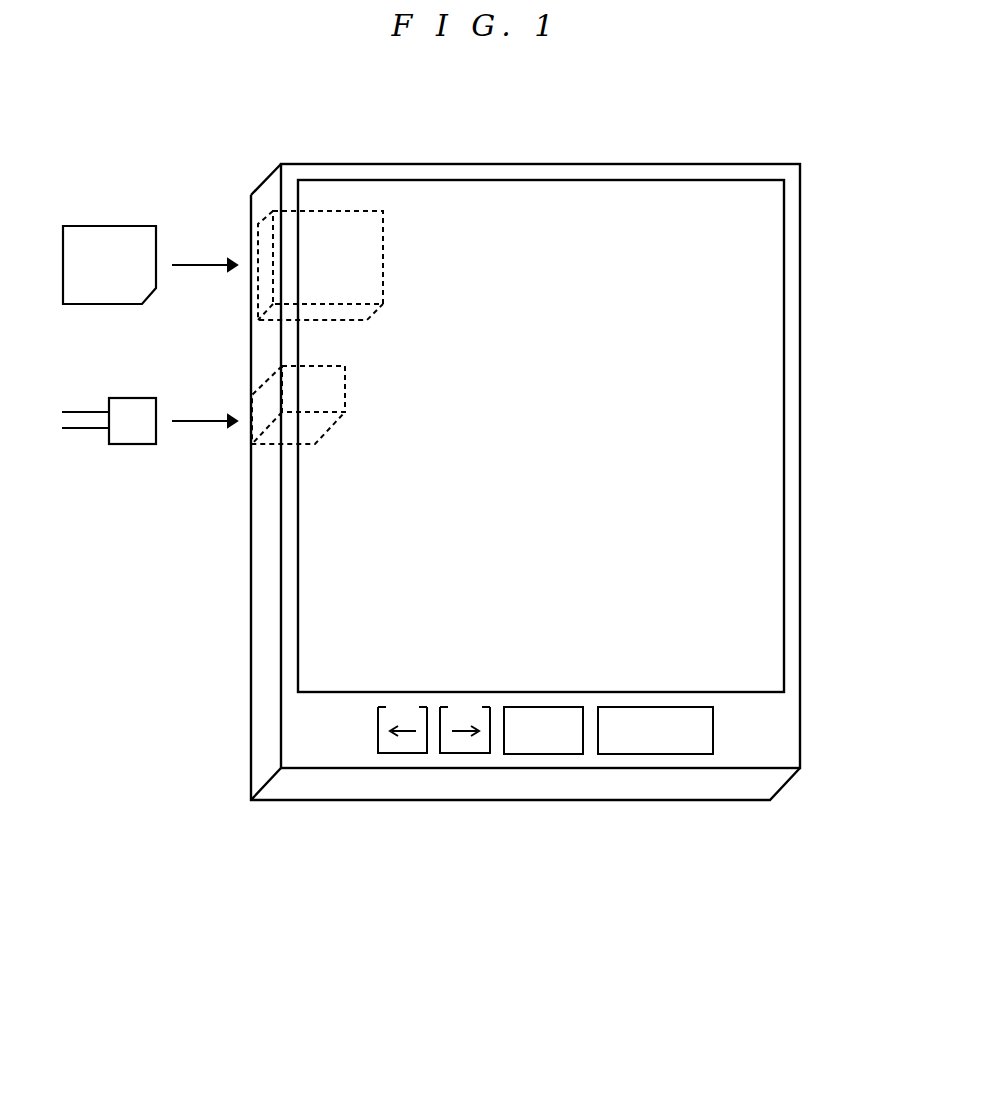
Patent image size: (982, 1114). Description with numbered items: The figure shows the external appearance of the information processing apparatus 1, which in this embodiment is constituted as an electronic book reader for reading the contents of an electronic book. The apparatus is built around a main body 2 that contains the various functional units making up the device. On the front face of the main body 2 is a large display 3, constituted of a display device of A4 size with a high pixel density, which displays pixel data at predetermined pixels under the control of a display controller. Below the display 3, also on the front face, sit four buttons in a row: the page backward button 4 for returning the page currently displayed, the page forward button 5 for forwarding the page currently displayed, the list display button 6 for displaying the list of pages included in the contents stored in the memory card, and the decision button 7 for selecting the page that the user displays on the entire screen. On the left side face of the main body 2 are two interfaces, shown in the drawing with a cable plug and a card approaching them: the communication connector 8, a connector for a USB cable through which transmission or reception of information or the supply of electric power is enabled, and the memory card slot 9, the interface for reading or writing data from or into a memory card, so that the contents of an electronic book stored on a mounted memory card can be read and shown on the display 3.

The information processing apparatus 1 is at (125, 843).
The main body 2 is at (783, 729).
The display 3 is at (775, 235).
The page backward button 4 is at (392, 748).
The page forward button 5 is at (453, 748).
The list display button 6 is at (533, 748).
The decision button 7 is at (628, 748).
The communication connector 8 is at (262, 422).
The memory card slot 9 is at (262, 280).